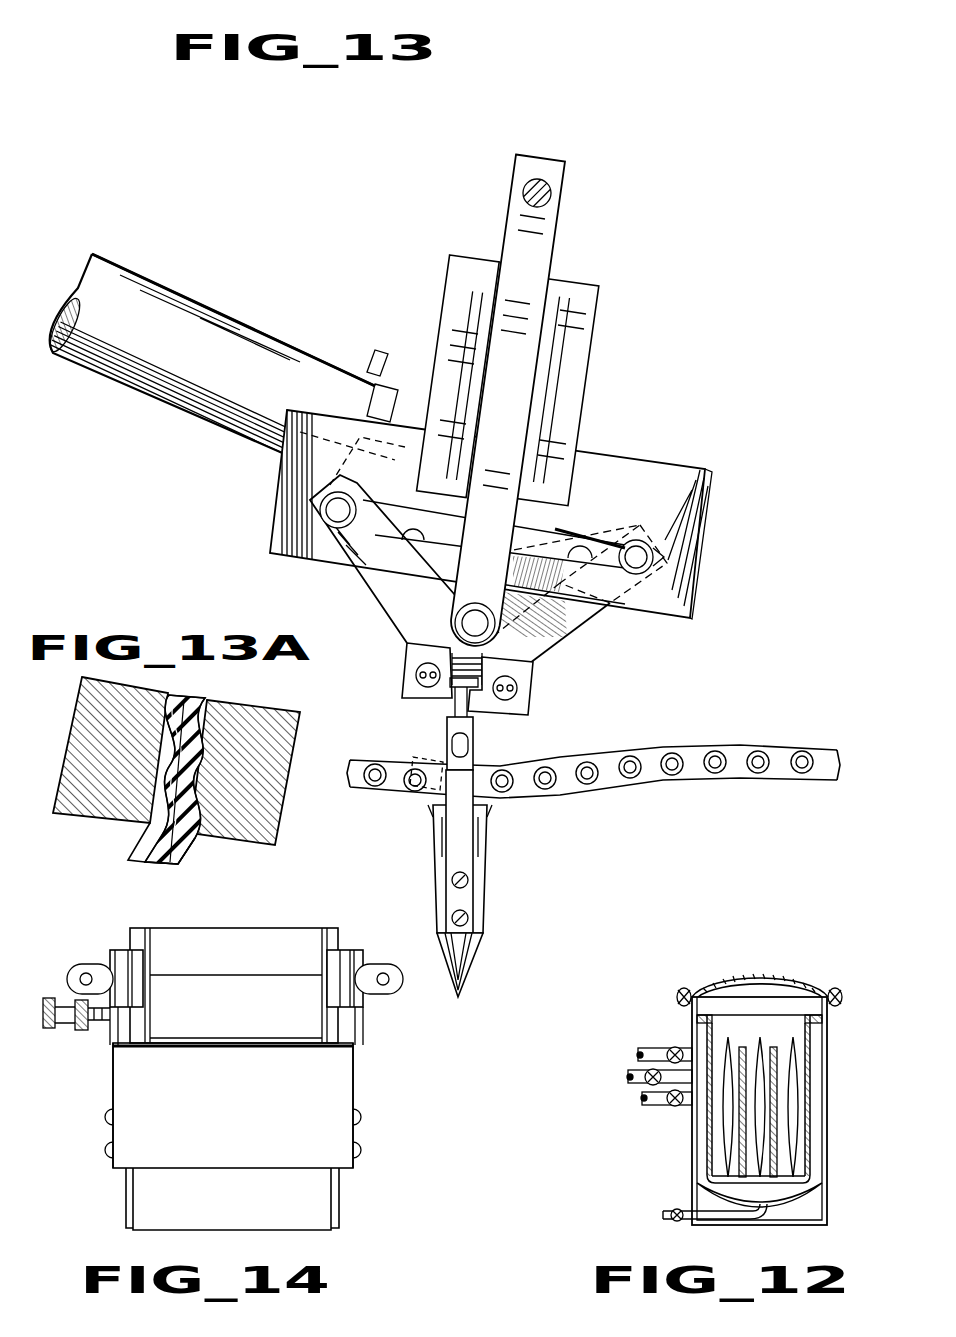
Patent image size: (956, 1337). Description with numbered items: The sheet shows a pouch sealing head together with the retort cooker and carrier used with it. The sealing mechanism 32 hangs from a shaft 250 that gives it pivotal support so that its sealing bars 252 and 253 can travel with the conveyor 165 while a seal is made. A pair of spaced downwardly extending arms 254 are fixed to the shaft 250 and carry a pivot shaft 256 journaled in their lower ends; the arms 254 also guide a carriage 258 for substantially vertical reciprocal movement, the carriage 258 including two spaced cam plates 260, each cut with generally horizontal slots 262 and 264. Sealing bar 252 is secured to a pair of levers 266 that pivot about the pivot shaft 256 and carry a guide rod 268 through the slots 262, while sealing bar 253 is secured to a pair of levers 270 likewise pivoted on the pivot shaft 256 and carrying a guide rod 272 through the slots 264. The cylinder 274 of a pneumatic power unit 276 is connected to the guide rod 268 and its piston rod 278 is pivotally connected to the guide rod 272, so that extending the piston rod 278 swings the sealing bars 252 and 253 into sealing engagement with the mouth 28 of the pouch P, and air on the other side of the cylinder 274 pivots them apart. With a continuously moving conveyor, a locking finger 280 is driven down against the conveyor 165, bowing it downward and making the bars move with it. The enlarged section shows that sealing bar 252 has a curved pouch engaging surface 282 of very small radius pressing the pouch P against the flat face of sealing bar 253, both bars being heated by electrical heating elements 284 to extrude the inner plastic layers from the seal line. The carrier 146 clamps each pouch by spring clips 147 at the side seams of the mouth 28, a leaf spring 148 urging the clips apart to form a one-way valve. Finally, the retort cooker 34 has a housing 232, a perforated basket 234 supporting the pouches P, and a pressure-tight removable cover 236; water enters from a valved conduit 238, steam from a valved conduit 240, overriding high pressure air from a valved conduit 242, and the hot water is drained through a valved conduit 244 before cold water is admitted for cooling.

In FIG. 13A, the mouth 28 is at (148, 820).
In FIG. 14, the mouth 28 is at (233, 950).
In FIG. 13, the sealing mechanism 32 is at (668, 395).
In FIG. 12, the retort cooker 34 is at (811, 970).
In FIG. 13, the carrier 146 is at (498, 845).
In FIG. 14, the carrier 146 is at (359, 1102).
In FIG. 13, the spring clips 147 is at (474, 724).
In FIG. 14, the spring clips 147 is at (110, 958).
In FIG. 13, the leaf spring 148 is at (452, 829).
In FIG. 14, the leaf spring 148 is at (113, 1080).
In FIG. 13, the conveyor 165 is at (763, 742).
In FIG. 14, the conveyor 165 is at (83, 1033).
In FIG. 13, the pouch P is at (477, 935).
In FIG. 13A, the pouch P is at (185, 861).
In FIG. 12, the pouch P is at (797, 1074).
In FIG. 12, the housing 232 is at (828, 1170).
In FIG. 12, the perforated basket 234 is at (811, 1115).
In FIG. 12, the cover 236 is at (741, 978).
In FIG. 12, the valved conduit 238 is at (640, 1098).
In FIG. 12, the valved conduit 240 is at (626, 1076).
In FIG. 12, the valved conduit 242 is at (636, 1055).
In FIG. 12, the valved conduit 244 is at (662, 1215).
In FIG. 13, the shaft 250 is at (553, 193).
In FIG. 13, the sealing bar 252 is at (403, 683).
In FIG. 13A, the sealing bar 252 is at (85, 712).
In FIG. 13, the sealing bar 253 is at (531, 701).
In FIG. 13A, the sealing bar 253 is at (278, 812).
In FIG. 13, the arms 254 is at (548, 228).
In FIG. 13, the pivot shaft 256 is at (455, 623).
In FIG. 13, the carriage 258 is at (582, 446).
In FIG. 13, the cam plate 260 is at (707, 470).
In FIG. 13, the slot 262 is at (395, 546).
In FIG. 13, the slot 264 is at (578, 560).
In FIG. 13, the levers 266 is at (370, 589).
In FIG. 13, the guide rod 268 is at (322, 506).
In FIG. 13, the levers 270 is at (583, 623).
In FIG. 13, the guide rod 272 is at (655, 557).
In FIG. 13, the cylinder 274 is at (127, 267).
In FIG. 13, the pneumatic power unit 276 is at (186, 283).
In FIG. 13, the piston rod 278 is at (380, 432).
In FIG. 13, the locking finger 280 is at (443, 763).
In FIG. 13A, the curved pouch engaging surface 282 is at (192, 708).
In FIG. 13, the electrical heating elements 284 is at (418, 668).